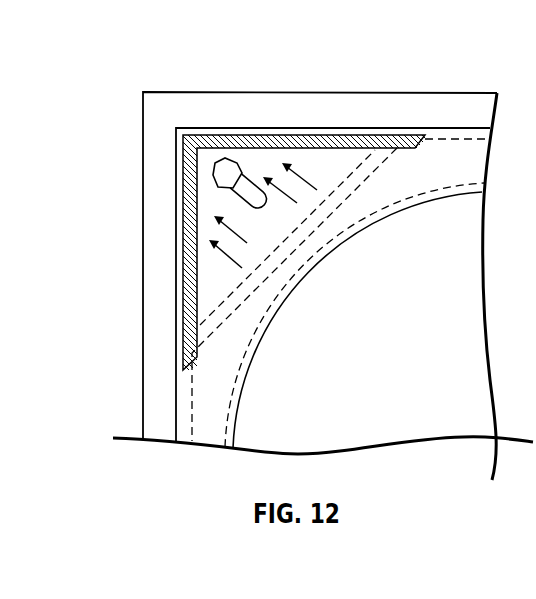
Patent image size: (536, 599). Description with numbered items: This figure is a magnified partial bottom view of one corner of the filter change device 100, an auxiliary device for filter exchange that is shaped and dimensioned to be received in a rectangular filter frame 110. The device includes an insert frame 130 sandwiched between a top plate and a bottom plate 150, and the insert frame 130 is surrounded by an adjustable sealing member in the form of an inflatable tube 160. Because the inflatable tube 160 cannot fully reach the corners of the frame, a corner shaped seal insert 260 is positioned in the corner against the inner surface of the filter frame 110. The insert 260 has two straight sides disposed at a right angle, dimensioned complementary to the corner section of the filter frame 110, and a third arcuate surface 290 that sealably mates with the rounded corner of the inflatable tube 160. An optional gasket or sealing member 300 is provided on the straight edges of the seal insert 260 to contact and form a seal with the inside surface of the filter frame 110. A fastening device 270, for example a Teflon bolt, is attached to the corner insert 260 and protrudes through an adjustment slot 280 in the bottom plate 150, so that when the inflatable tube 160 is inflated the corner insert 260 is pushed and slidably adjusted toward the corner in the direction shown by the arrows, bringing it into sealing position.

The filter change device 100 is at (467, 79).
The filter frame 110 is at (178, 92).
The bottom plate 150 is at (402, 128).
The gasket or sealing member 300 is at (287, 137).
The corner shaped seal insert 260 is at (341, 290).
The arcuate surface 290 is at (220, 237).
The inflatable tube 160 is at (223, 383).
The insert frame 130 is at (232, 430).
The fastening device 270 is at (228, 167).
The adjustment slot 280 is at (247, 188).